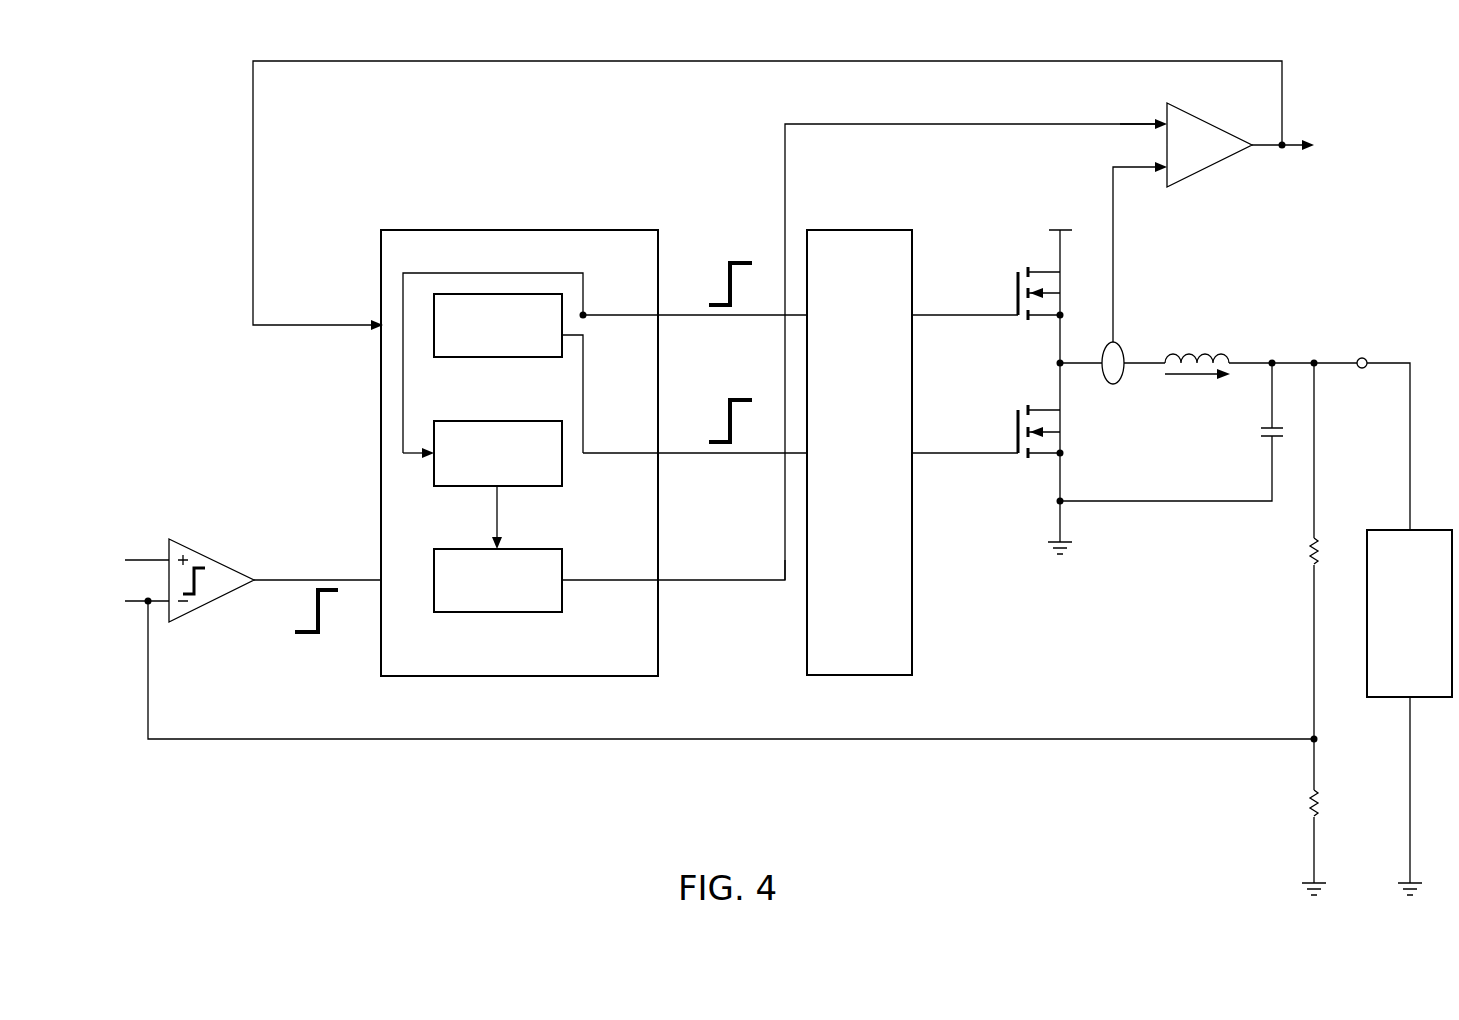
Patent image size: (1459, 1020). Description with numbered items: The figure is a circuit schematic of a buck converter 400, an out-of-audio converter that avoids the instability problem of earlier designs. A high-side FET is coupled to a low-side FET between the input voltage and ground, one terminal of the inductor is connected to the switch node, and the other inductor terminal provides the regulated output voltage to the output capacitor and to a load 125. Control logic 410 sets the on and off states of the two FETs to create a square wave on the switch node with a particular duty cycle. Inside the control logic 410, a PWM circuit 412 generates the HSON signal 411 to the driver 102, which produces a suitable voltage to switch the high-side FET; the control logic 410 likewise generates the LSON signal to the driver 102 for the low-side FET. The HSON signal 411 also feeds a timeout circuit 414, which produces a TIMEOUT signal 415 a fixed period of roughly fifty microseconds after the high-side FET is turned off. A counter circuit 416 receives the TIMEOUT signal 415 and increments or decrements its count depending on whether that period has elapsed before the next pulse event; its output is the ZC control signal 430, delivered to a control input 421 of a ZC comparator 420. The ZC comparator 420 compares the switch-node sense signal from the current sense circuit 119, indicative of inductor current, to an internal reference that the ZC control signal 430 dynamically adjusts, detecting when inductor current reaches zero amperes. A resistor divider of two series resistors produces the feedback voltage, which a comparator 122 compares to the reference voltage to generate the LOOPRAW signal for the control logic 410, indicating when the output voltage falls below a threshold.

The buck converter 400 is at (174, 84).
The control logic 410 is at (475, 222).
The HSON signal 411 is at (729, 319).
The PWM circuit 412 is at (462, 358).
The timeout circuit 414 is at (529, 420).
The TIMEOUT signal 415 is at (498, 516).
The counter circuit 416 is at (487, 613).
The ZC control signal 430 is at (718, 583).
The driver 102 is at (879, 481).
The comparator 122 is at (213, 605).
The ZC comparator 420 is at (1210, 121).
The control input 421 is at (1160, 118).
The current sense circuit 119 is at (1118, 386).
The load 125 is at (1431, 643).